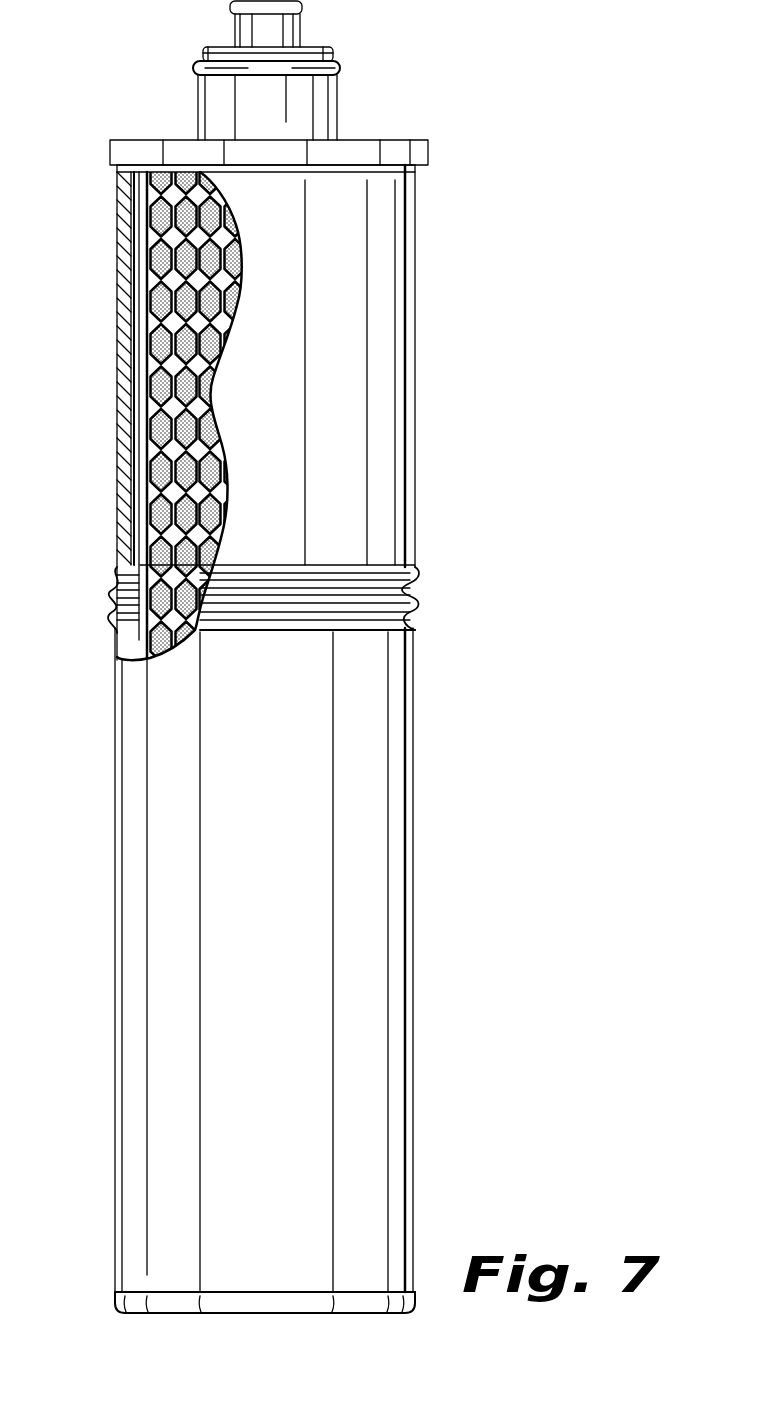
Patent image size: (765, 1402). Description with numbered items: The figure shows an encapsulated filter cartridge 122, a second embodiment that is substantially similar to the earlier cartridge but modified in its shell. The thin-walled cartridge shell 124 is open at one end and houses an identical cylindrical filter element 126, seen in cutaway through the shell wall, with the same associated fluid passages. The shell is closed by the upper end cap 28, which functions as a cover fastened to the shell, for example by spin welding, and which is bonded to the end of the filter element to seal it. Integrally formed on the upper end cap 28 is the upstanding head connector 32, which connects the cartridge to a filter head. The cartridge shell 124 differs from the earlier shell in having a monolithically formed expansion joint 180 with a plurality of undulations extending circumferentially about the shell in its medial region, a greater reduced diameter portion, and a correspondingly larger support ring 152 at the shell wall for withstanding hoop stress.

The head connector 32 is at (217, 110).
The upper end cap 28 is at (393, 155).
The filter cartridge 122 is at (453, 320).
The support ring 152 is at (118, 248).
The cartridge shell 124 is at (138, 408).
The cylindrical filter element 126 is at (157, 460).
The expansion joint 180 is at (410, 607).